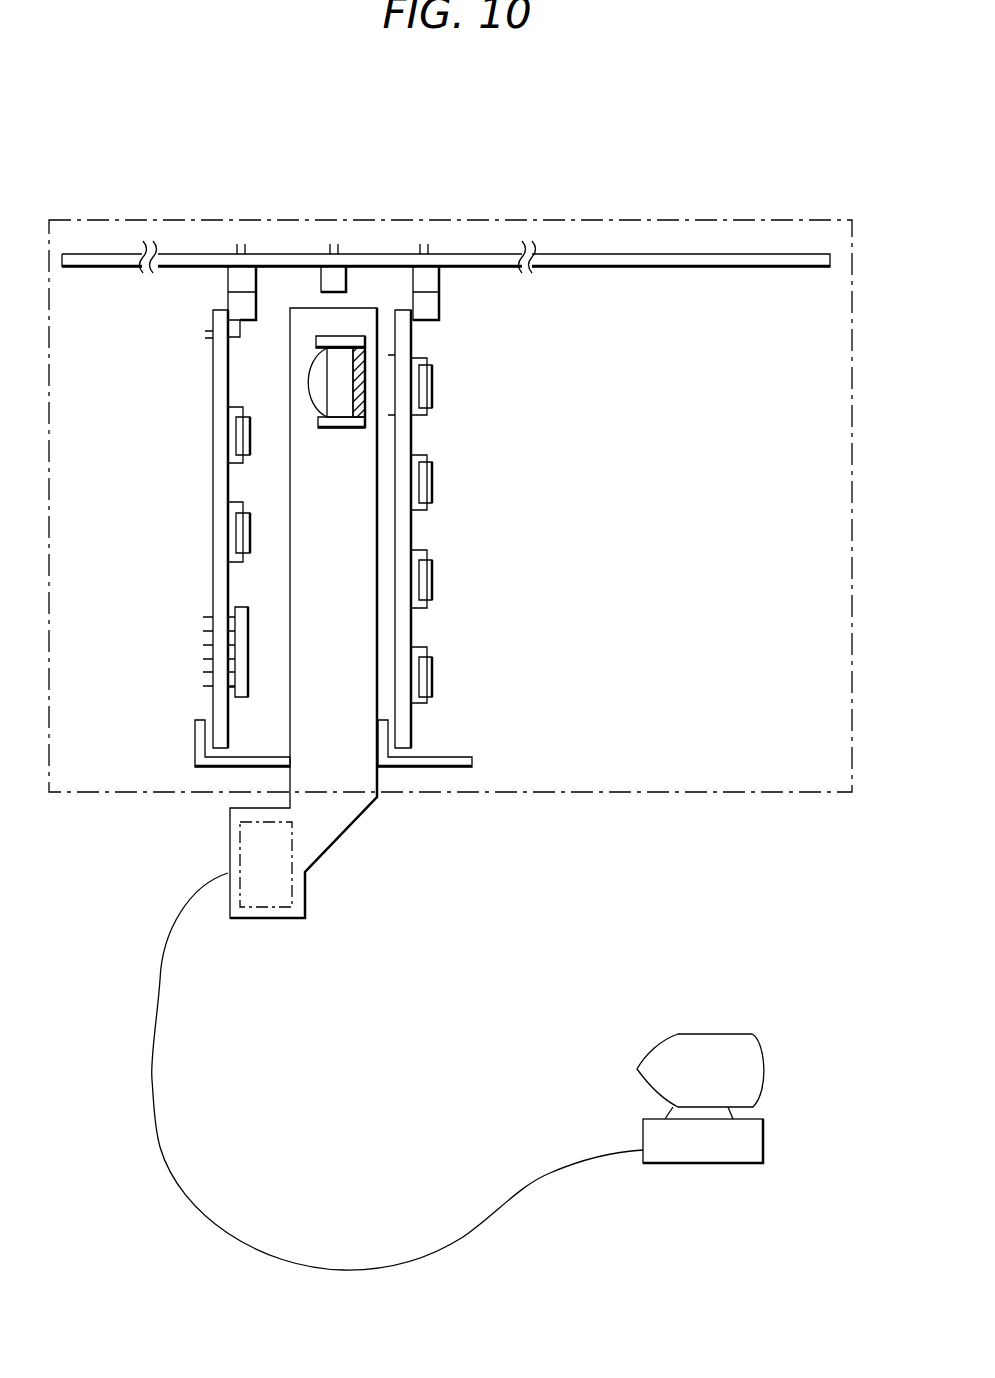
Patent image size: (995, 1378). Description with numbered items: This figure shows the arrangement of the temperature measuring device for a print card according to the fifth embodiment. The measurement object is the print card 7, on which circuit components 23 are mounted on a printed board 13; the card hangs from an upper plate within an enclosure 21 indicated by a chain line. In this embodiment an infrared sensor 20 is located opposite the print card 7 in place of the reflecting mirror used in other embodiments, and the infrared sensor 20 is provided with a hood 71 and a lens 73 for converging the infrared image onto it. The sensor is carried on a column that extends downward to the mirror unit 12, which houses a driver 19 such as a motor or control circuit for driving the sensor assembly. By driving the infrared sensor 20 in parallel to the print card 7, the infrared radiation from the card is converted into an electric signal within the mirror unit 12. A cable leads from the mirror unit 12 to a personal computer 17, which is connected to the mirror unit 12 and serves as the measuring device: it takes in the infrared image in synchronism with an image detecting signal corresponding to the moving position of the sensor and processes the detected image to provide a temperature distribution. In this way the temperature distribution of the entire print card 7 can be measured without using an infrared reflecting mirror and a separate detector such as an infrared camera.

The print card 7 is at (213, 405).
The mirror unit 12 is at (252, 920).
The printed board 13 is at (212, 702).
The personal computer 17 is at (688, 1152).
The driver 19 is at (282, 890).
The infrared sensor 20 is at (360, 347).
The cabinet 21 is at (635, 218).
The circuit component 23 is at (237, 435).
The hood 71 is at (343, 337).
The lens 73 is at (315, 378).